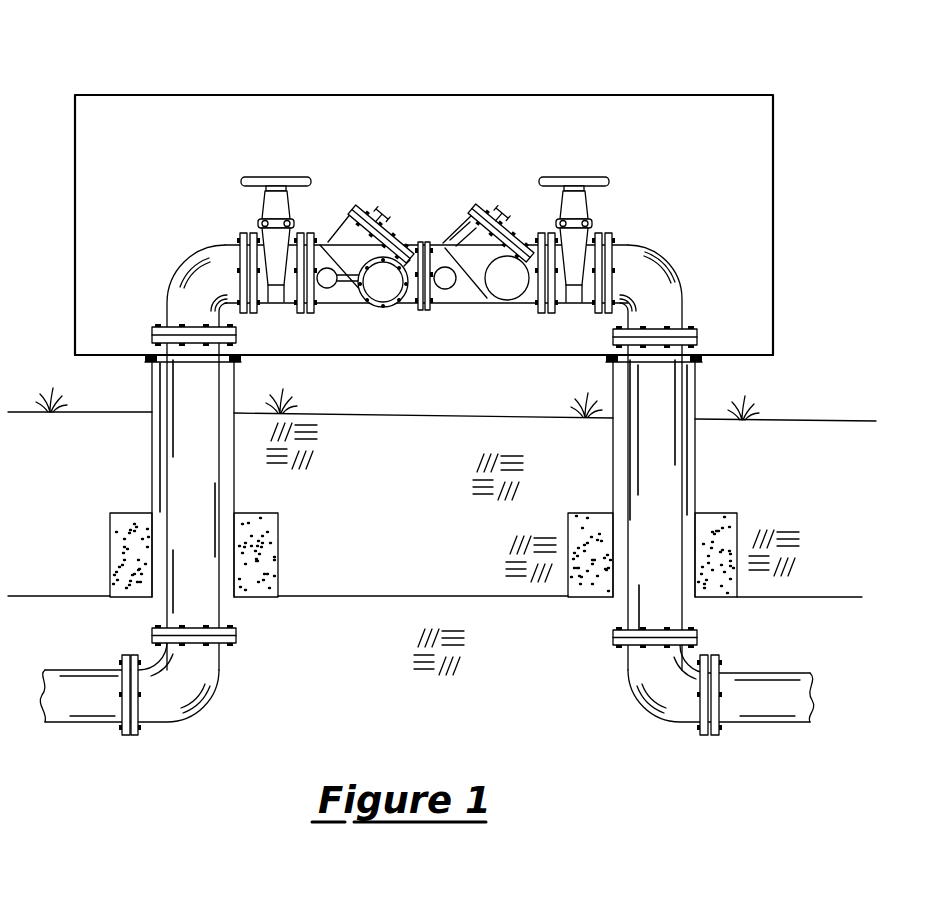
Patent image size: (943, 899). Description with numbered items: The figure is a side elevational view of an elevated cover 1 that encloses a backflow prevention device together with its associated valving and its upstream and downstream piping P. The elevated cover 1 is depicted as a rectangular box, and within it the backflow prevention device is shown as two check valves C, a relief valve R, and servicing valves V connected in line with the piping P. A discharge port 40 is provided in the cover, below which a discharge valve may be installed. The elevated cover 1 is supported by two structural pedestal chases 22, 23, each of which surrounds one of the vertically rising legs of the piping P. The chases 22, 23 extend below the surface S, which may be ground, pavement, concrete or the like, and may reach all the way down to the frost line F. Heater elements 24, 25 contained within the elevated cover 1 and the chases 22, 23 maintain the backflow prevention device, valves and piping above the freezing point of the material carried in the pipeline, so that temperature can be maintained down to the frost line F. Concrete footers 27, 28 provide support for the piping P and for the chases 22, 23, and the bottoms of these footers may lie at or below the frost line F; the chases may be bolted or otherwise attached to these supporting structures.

The elevated cover 1 is at (75, 118).
The servicing valves V is at (252, 177).
The check valves C is at (358, 200).
The relief valve R is at (377, 310).
The discharge port 40 is at (400, 355).
The heater element 24 is at (152, 413).
The heater element 25 is at (686, 420).
The structural pedestal chase 22 is at (152, 470).
The structural pedestal chase 23 is at (697, 452).
The concrete footer 27 is at (112, 557).
The concrete footer 28 is at (737, 582).
The surface S is at (72, 413).
The frost line F is at (412, 595).
The piping P is at (219, 612).